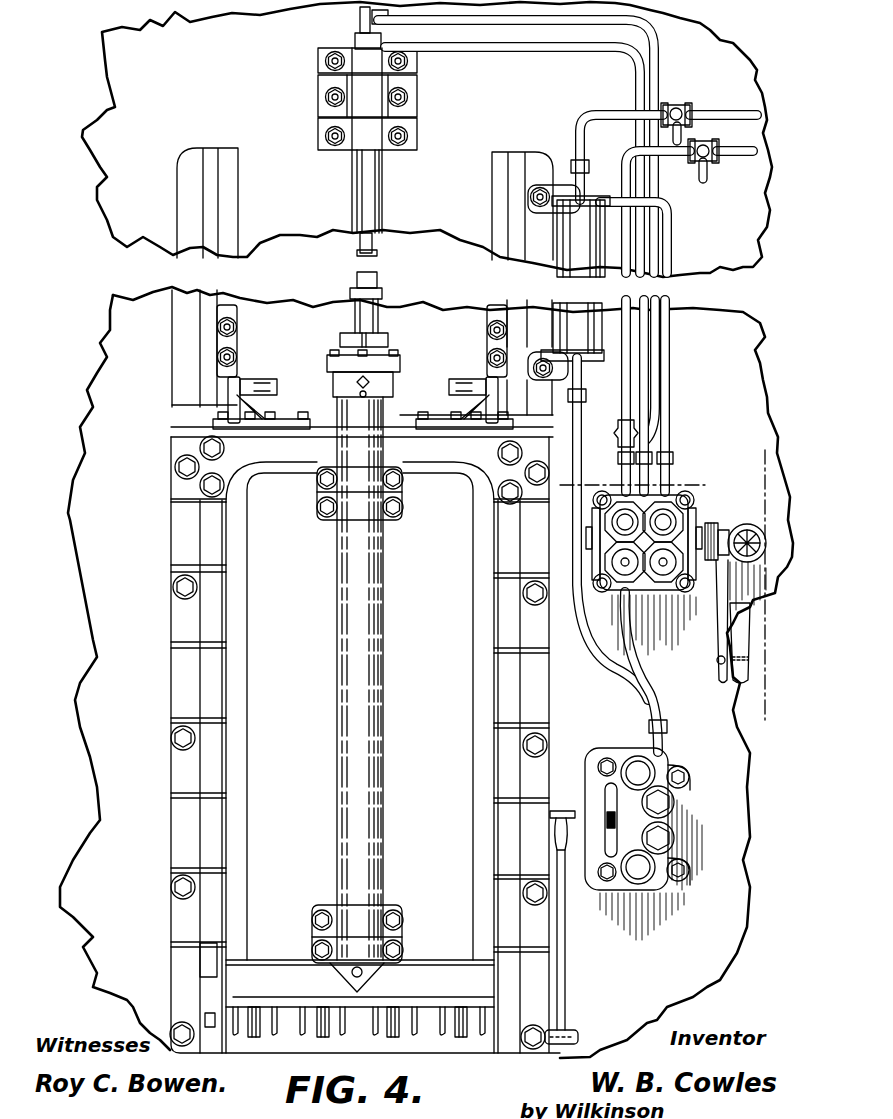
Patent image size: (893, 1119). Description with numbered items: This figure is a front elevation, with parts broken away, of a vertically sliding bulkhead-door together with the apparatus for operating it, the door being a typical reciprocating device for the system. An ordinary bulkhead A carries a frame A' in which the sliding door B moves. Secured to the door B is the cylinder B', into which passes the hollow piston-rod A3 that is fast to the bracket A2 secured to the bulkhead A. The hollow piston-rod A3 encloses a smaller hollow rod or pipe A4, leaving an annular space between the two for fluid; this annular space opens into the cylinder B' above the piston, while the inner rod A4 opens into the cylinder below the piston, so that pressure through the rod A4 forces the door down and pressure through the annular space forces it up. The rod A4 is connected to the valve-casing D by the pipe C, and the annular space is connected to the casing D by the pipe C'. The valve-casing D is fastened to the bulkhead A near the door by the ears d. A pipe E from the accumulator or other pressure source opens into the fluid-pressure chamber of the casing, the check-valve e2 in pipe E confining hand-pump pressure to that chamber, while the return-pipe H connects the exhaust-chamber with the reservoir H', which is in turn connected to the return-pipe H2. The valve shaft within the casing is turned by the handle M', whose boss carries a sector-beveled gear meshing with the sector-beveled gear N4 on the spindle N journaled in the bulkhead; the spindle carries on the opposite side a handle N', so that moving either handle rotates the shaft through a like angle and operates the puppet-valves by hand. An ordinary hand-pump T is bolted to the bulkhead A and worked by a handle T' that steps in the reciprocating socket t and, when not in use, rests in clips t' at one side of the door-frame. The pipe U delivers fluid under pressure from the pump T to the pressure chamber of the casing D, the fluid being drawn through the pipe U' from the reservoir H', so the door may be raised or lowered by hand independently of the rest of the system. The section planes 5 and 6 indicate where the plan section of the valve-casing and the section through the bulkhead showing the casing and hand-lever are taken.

The bulkhead A is at (422, 518).
The frame A' is at (345, 731).
The bracket A2 is at (317, 100).
The hollow piston-rod A3 is at (383, 193).
The hollow rod or pipe A4 is at (372, 247).
The sliding door B is at (360, 716).
The cylinder B' is at (373, 694).
The pipe C is at (540, 256).
The pipe C' is at (455, 49).
The valve-casing D is at (652, 500).
The ears d is at (683, 595).
The pipe E is at (720, 157).
The check-valve e2 is at (617, 436).
The return-pipe H is at (654, 347).
The reservoir H' is at (561, 282).
The return-pipe H2 is at (705, 118).
The handle M' is at (713, 593).
The spindle N is at (754, 533).
The handle N' is at (754, 621).
The sector-beveled gear N4 is at (729, 527).
The hand-pump T is at (647, 844).
The handle T' is at (582, 940).
The reciprocating socket t is at (587, 814).
The clips t' is at (560, 930).
The pipe U is at (661, 672).
The pipe U' is at (608, 533).
The section plane 5 is at (629, 485).
The section plane 6 is at (763, 585).